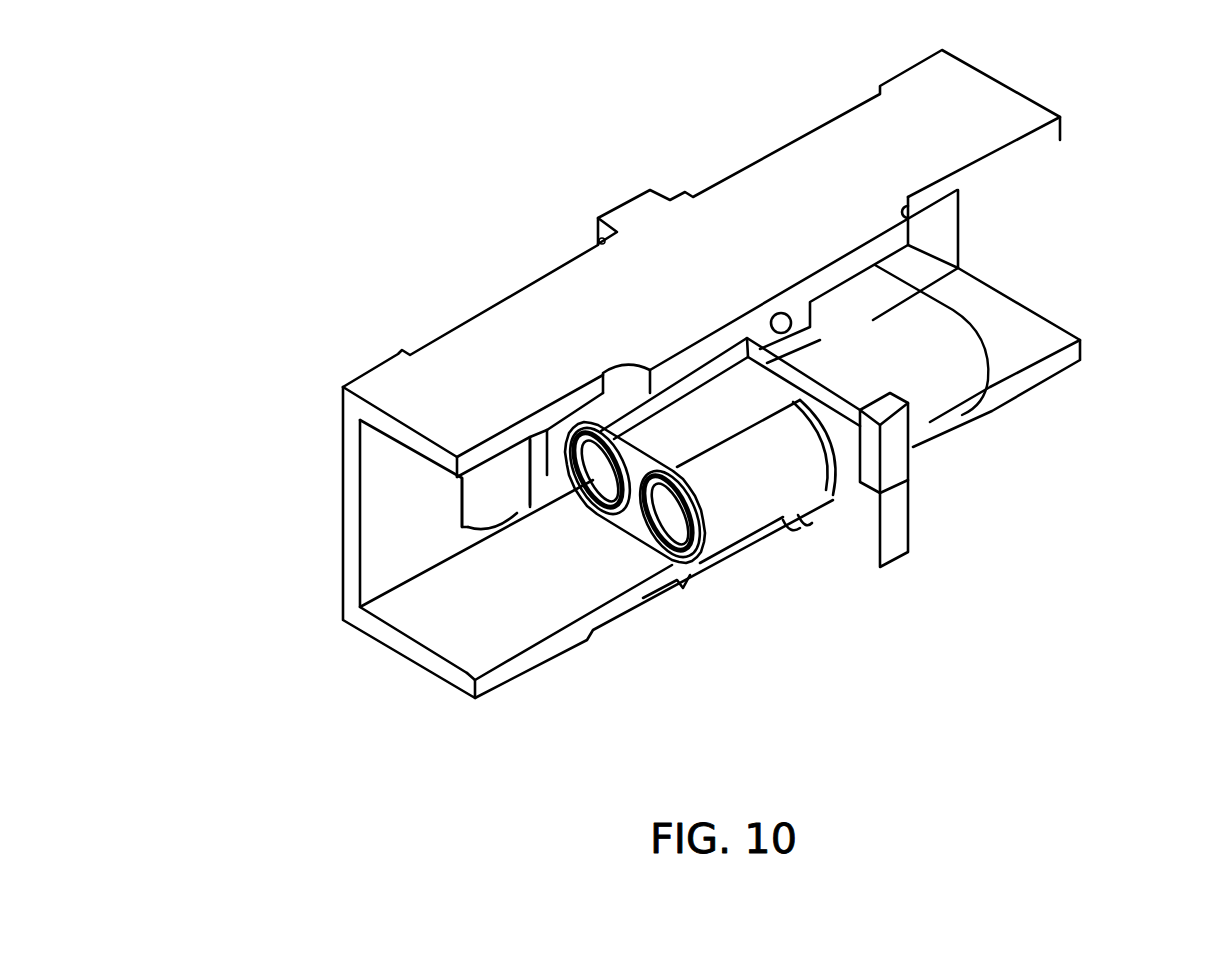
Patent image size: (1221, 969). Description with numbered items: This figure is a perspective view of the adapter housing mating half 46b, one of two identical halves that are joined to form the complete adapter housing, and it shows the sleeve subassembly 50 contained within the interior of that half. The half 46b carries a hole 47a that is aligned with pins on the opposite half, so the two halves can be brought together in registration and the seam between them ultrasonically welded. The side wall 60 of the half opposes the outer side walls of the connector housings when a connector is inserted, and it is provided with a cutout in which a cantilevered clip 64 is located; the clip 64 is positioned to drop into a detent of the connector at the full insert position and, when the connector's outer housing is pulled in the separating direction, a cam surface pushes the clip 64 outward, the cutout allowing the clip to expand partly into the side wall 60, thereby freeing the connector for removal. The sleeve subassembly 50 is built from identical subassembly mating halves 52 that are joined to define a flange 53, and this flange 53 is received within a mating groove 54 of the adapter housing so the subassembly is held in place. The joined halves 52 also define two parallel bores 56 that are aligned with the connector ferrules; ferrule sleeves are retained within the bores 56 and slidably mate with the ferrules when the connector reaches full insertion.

The adapter housing mating half 46b is at (508, 228).
The hole 47a is at (797, 307).
The sleeve subassembly 50 is at (878, 566).
The subassembly mating half 52 is at (943, 397).
The flange 53 is at (880, 410).
The mating groove 54 is at (797, 343).
The bore 56 is at (652, 550).
The side wall 60 is at (360, 510).
The cantilevered clip 64 is at (507, 483).